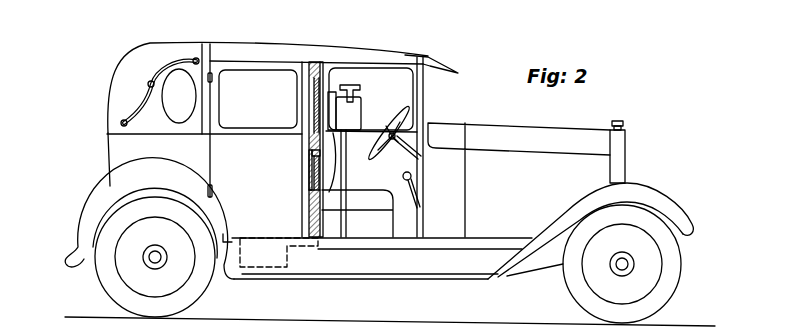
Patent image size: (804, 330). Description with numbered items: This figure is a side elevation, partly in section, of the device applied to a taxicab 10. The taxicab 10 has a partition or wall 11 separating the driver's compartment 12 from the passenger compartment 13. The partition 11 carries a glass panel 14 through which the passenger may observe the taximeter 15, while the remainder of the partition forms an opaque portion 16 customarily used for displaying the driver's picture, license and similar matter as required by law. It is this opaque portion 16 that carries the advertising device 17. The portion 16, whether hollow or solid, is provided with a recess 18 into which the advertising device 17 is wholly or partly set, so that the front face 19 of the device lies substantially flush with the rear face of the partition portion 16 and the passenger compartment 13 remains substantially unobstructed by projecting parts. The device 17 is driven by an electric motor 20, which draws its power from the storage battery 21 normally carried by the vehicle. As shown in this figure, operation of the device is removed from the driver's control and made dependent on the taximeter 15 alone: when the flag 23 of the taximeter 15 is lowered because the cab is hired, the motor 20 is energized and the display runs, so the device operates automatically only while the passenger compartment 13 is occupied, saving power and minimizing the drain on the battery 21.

The taxicab 10 is at (484, 114).
The partition 11 is at (313, 62).
The driver's compartment 12 is at (382, 75).
The passenger compartment 13 is at (235, 72).
The glass panel 14 is at (323, 78).
The taximeter 15 is at (361, 110).
The opaque portion of the partition 16 is at (309, 220).
The advertising device 17 is at (310, 182).
The recess 18 is at (329, 197).
The front face 19 is at (311, 155).
The electric motor 20 is at (313, 171).
The storage battery 21 is at (262, 270).
The flag 23 is at (350, 82).